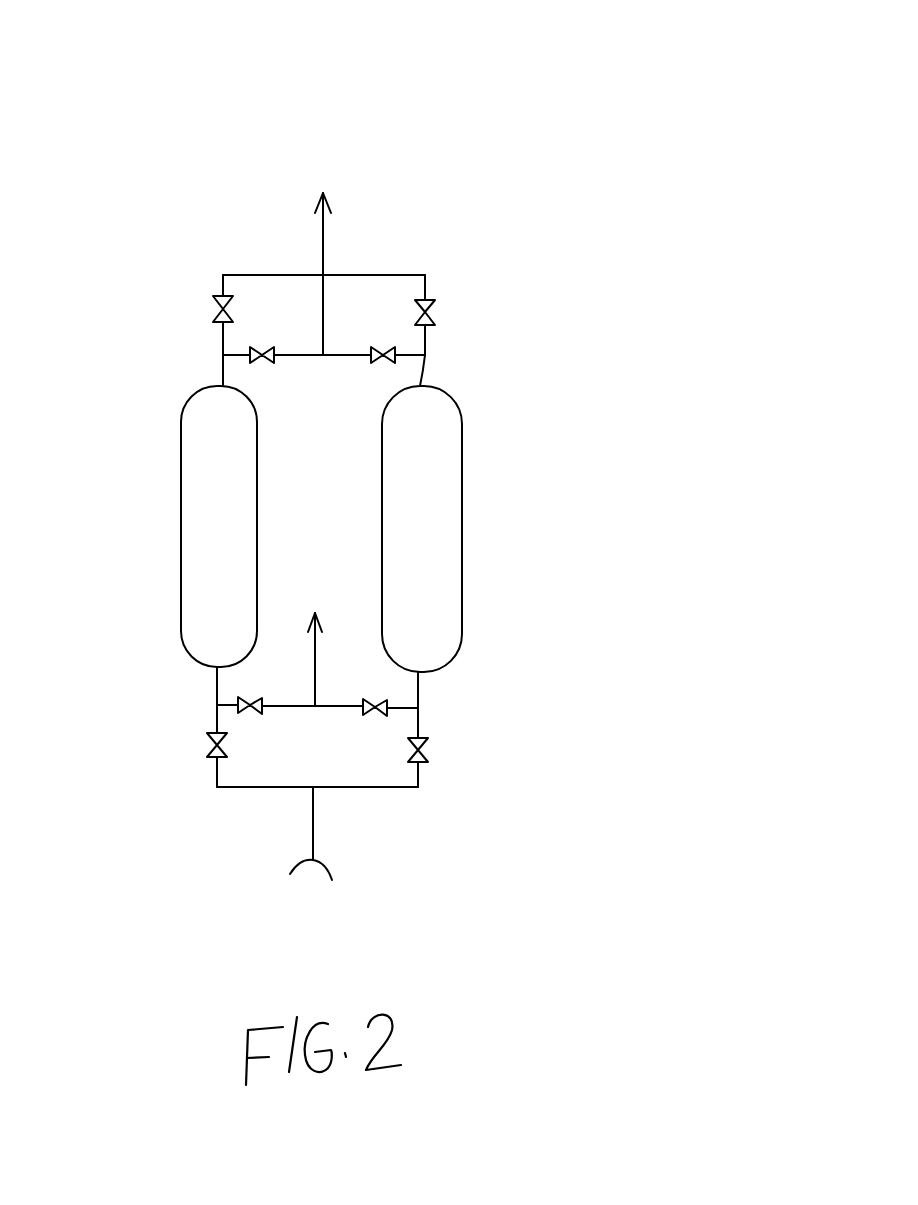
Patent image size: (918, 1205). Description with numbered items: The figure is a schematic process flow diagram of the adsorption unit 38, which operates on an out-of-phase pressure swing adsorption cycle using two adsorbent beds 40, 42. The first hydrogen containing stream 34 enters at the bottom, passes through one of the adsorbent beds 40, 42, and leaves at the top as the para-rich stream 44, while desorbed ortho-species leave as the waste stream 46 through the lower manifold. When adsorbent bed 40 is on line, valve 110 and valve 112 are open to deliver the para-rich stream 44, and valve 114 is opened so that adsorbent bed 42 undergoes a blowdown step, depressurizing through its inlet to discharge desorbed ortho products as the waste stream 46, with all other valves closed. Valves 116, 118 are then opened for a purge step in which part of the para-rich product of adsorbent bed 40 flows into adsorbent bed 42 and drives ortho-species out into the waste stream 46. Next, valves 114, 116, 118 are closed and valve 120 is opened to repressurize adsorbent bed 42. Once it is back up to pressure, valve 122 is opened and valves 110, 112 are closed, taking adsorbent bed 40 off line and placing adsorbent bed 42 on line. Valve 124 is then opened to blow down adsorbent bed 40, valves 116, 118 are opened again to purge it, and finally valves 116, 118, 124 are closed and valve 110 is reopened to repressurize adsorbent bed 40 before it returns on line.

The adsorption unit 38 is at (795, 60).
The first hydrogen containing stream 34 is at (308, 838).
The para-rich stream 44 is at (378, 220).
The waste stream 46 is at (334, 663).
The adsorbent bed 40 is at (198, 587).
The adsorbent bed 42 is at (512, 540).
The valve 110 is at (215, 752).
The valve 112 is at (268, 352).
The valve 114 is at (363, 716).
The valve 116 is at (214, 322).
The valve 118 is at (472, 297).
The valve 120 is at (470, 736).
The valve 122 is at (380, 360).
The valve 124 is at (261, 712).